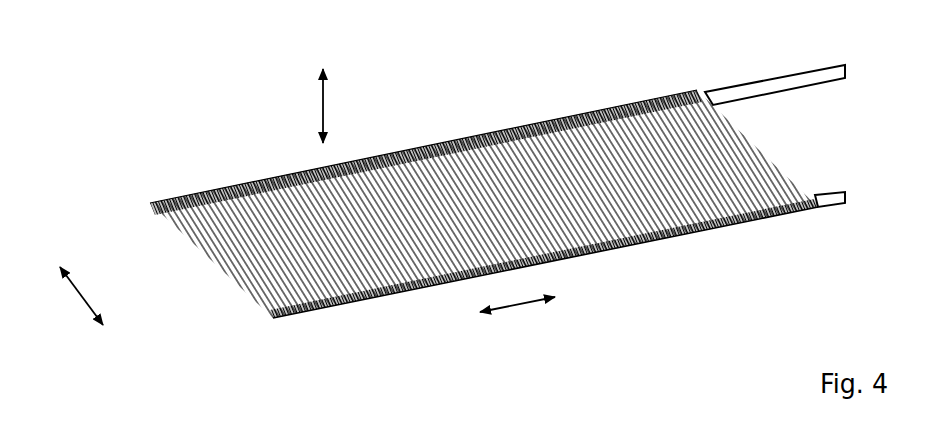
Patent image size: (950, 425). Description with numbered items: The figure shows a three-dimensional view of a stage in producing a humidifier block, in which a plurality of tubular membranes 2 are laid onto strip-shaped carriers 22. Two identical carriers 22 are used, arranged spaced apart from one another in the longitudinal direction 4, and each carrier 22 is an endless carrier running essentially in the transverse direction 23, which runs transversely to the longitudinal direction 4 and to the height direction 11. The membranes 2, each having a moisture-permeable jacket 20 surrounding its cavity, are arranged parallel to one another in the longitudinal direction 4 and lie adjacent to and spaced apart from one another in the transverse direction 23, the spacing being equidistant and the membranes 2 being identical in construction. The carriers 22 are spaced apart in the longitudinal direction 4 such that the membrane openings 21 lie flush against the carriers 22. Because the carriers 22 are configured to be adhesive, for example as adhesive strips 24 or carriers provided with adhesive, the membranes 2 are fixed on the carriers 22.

The membrane 2 is at (198, 258).
The longitudinal direction 4 is at (80, 297).
The height direction 11 is at (322, 103).
The jacket 20 is at (190, 238).
The membrane opening 21 is at (151, 203).
The strip-shaped carrier 22 is at (767, 84).
The transverse direction 23 is at (518, 310).
The adhesive strip 24 is at (833, 194).